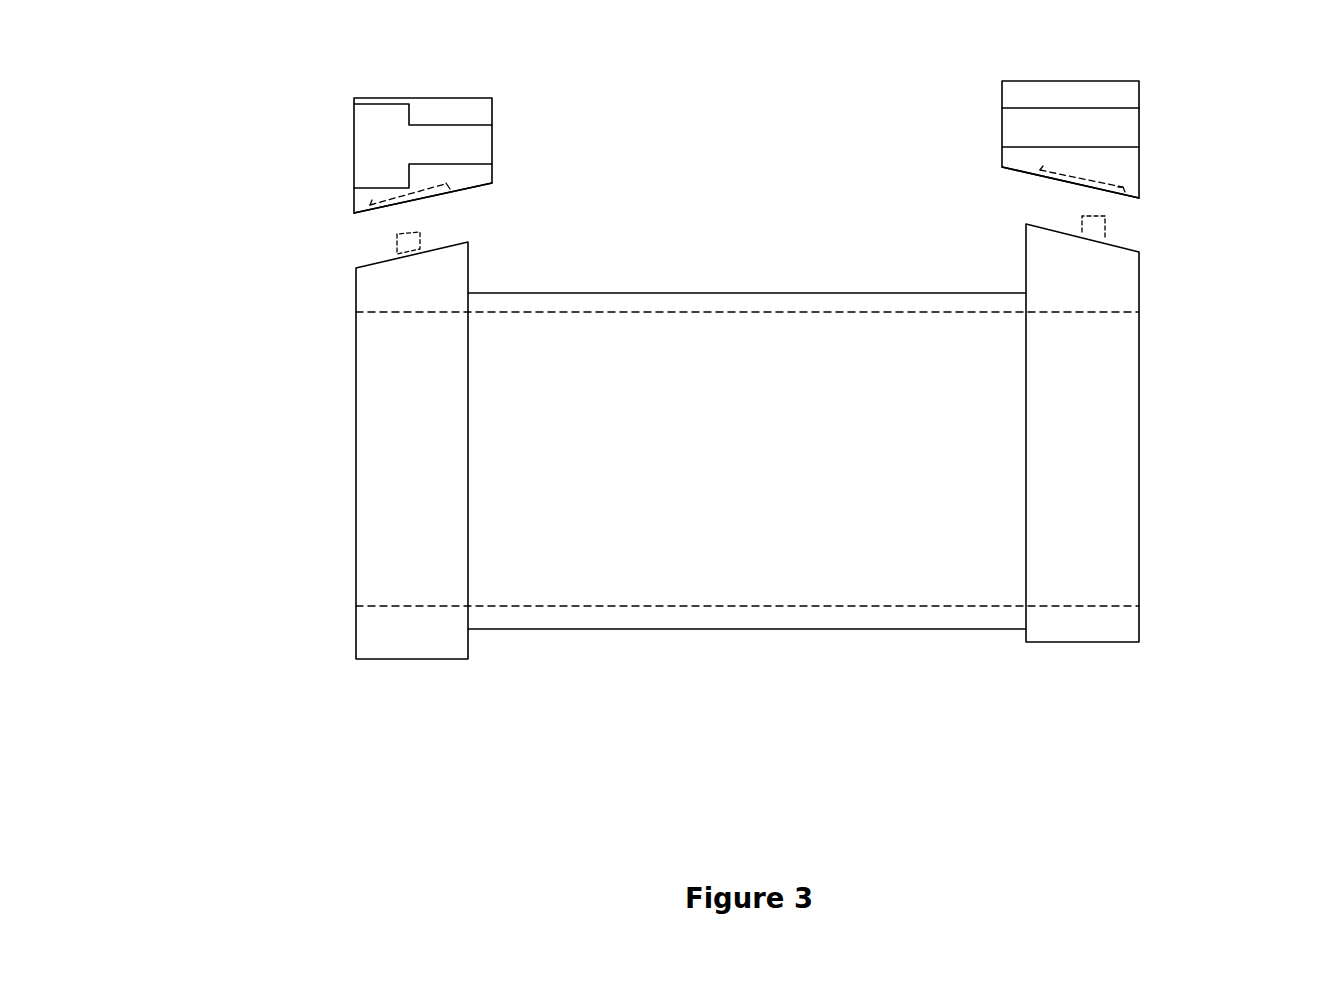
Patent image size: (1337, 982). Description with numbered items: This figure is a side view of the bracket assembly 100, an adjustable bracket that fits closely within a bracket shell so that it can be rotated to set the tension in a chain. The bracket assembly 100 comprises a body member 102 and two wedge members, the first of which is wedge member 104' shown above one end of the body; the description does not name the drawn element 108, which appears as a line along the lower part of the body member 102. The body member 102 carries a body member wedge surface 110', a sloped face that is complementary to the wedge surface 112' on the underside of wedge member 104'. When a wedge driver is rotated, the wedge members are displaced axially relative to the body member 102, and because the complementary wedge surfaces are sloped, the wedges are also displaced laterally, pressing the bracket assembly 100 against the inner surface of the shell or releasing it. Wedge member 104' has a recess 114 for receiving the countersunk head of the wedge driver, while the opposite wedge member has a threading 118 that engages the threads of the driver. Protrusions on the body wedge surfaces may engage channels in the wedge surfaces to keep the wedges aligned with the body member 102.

The bracket assembly 100 is at (758, 504).
The body member 102 is at (585, 606).
The wedge member 104' is at (451, 152).
The base plate 108 is at (775, 572).
The body member wedge surface 110' is at (350, 445).
The wedge surface 112' is at (508, 201).
The recess 114 is at (374, 147).
The threading 118 is at (1108, 113).